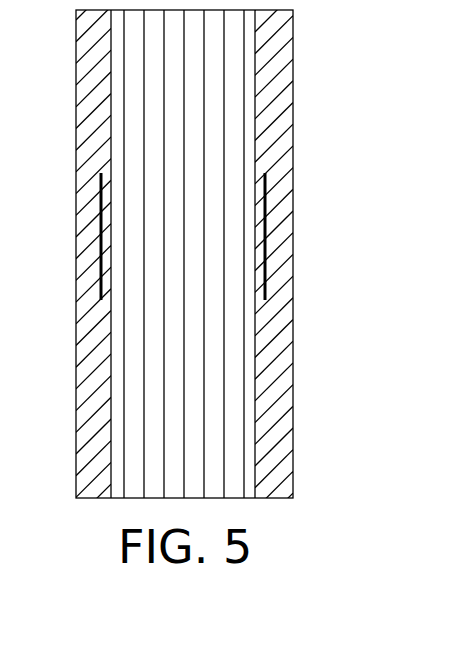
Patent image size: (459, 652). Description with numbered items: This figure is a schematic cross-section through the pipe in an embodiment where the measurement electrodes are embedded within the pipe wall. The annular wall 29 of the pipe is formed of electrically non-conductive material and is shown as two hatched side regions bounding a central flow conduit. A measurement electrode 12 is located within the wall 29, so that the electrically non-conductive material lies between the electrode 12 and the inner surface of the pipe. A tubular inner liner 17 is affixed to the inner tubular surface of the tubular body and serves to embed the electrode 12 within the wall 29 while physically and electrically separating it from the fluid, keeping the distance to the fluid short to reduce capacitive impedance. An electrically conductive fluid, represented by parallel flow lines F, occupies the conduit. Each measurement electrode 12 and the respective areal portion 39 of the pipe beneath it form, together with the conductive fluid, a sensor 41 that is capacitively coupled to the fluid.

The annular wall 29 is at (199, 276).
The tubular inner liner 17 is at (100, 140).
The areal portion 39 is at (124, 257).
The measurement electrode 12 is at (278, 238).
The sensor 41 is at (275, 276).
The parallel flow lines F is at (233, 418).